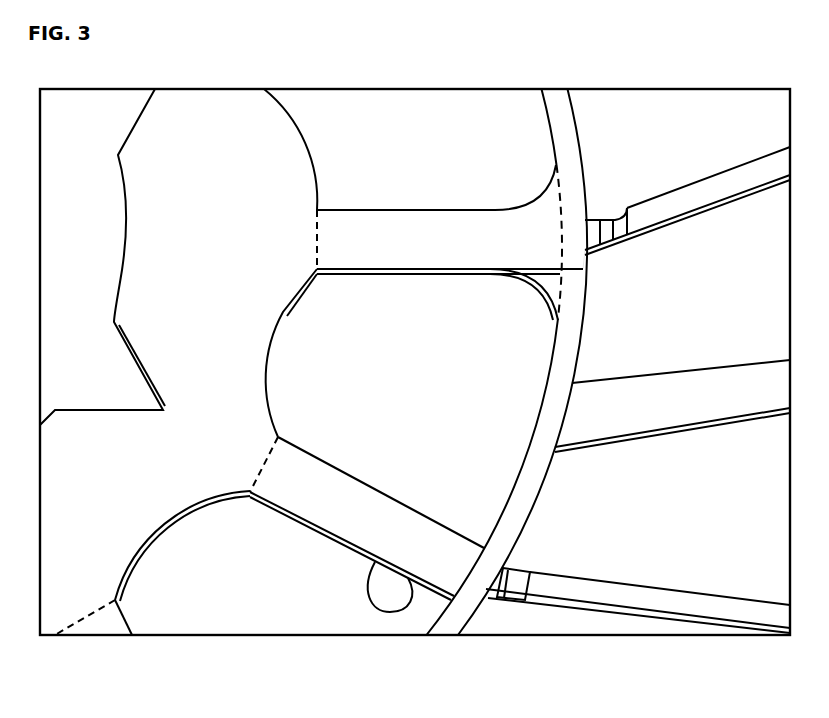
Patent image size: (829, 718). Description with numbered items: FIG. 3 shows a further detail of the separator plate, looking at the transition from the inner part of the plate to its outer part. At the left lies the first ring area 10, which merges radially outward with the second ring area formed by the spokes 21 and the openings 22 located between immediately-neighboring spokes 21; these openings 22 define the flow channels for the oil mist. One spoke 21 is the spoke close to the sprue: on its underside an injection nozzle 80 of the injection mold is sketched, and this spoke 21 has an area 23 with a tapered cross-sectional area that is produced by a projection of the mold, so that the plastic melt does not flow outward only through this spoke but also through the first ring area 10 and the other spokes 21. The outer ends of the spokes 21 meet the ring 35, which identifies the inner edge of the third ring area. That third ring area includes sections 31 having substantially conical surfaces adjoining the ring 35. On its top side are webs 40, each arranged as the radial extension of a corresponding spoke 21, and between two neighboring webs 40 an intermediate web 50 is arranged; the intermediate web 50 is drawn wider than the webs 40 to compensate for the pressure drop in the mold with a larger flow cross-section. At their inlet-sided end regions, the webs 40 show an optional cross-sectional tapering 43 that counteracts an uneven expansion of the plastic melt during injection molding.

The first ring area 10 is at (188, 268).
The spoke 21 is at (422, 233).
The opening 22 is at (429, 400).
The area with tapered cross-sectional area 23 is at (452, 518).
The conical section 31 is at (694, 326).
The ring 35 is at (520, 497).
The web 40 is at (742, 180).
The cross-sectional tapering 43 is at (615, 218).
The intermediate web 50 is at (682, 402).
The injection nozzle 80 is at (386, 600).